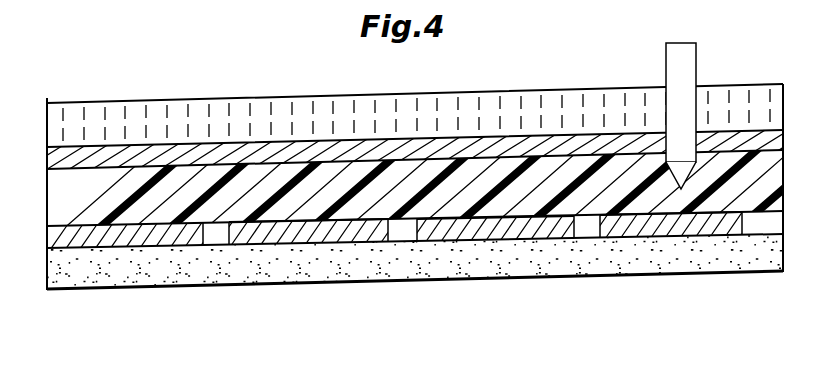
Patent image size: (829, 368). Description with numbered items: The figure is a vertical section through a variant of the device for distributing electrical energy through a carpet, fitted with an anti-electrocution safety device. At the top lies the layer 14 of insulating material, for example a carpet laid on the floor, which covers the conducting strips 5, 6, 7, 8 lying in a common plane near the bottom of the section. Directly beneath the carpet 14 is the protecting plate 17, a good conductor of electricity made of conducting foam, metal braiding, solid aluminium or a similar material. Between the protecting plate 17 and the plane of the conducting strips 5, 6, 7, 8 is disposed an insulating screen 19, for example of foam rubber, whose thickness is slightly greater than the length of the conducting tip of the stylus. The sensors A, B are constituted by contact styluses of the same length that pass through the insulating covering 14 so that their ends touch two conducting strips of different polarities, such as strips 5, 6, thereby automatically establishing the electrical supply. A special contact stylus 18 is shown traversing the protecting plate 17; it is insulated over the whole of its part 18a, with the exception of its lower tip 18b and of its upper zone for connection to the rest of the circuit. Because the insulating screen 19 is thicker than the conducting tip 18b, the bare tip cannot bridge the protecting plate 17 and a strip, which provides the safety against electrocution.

The layer of insulating material 14 is at (72, 105).
The protecting plate 17 is at (133, 156).
The insulating screen 19 is at (86, 215).
The conducting strip 5 is at (133, 238).
The conducting strip 6 is at (304, 237).
The conducting strip 7 is at (485, 228).
The conducting strip 8 is at (665, 226).
The sensor A is at (176, 236).
The sensor B is at (350, 237).
The contact stylus 18 is at (702, 110).
The insulated part of contact stylus 18a is at (668, 74).
The lower tip of contact stylus 18b is at (708, 160).